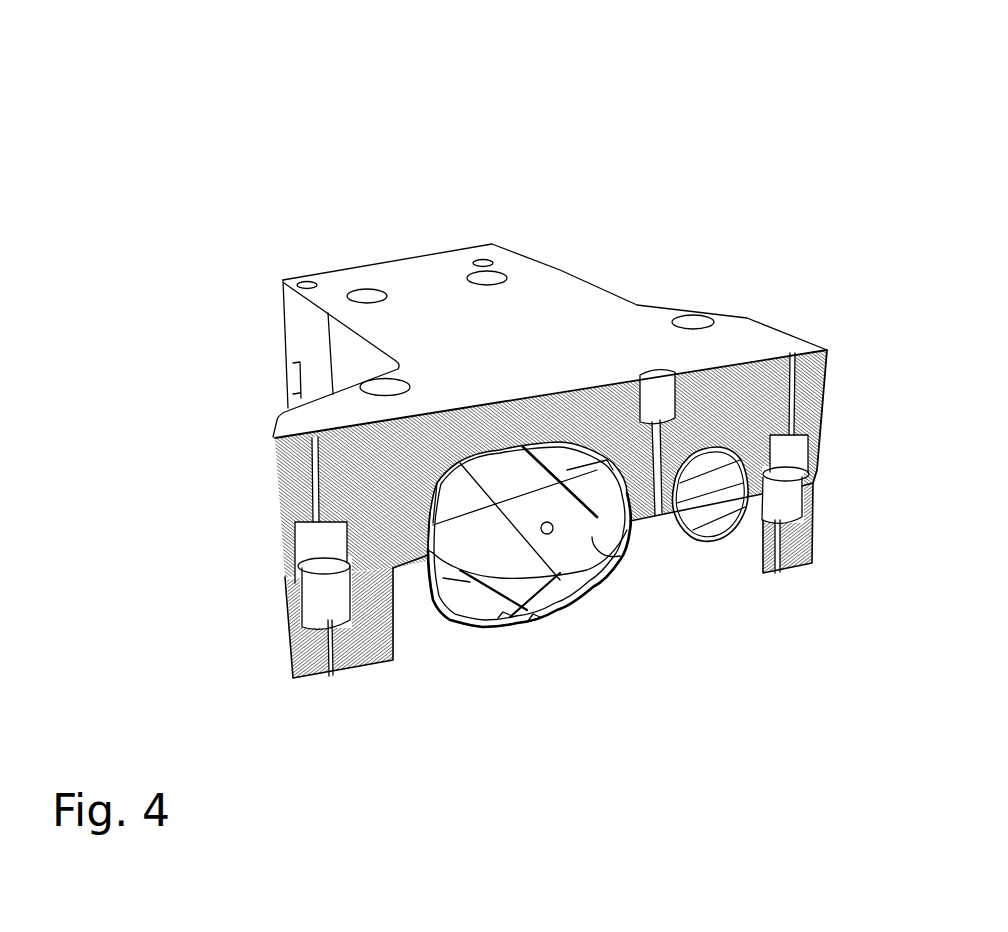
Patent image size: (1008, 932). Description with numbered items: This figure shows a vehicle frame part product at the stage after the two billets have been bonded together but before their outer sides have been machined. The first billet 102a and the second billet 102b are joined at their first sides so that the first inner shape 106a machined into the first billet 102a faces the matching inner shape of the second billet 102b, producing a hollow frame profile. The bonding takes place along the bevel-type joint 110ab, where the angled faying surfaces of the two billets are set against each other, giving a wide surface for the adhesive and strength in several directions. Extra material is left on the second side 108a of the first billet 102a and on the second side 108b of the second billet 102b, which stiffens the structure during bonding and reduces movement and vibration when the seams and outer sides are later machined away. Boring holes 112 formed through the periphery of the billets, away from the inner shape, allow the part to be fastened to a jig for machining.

The first billet 102a is at (545, 618).
The second billet 102b is at (358, 262).
The first inner shape 106a is at (514, 628).
The second side of the first billet 108a is at (717, 547).
The second side of the second billet 108b is at (543, 305).
The bevel-type joint 110ab is at (421, 580).
The boring holes 112 is at (697, 322).